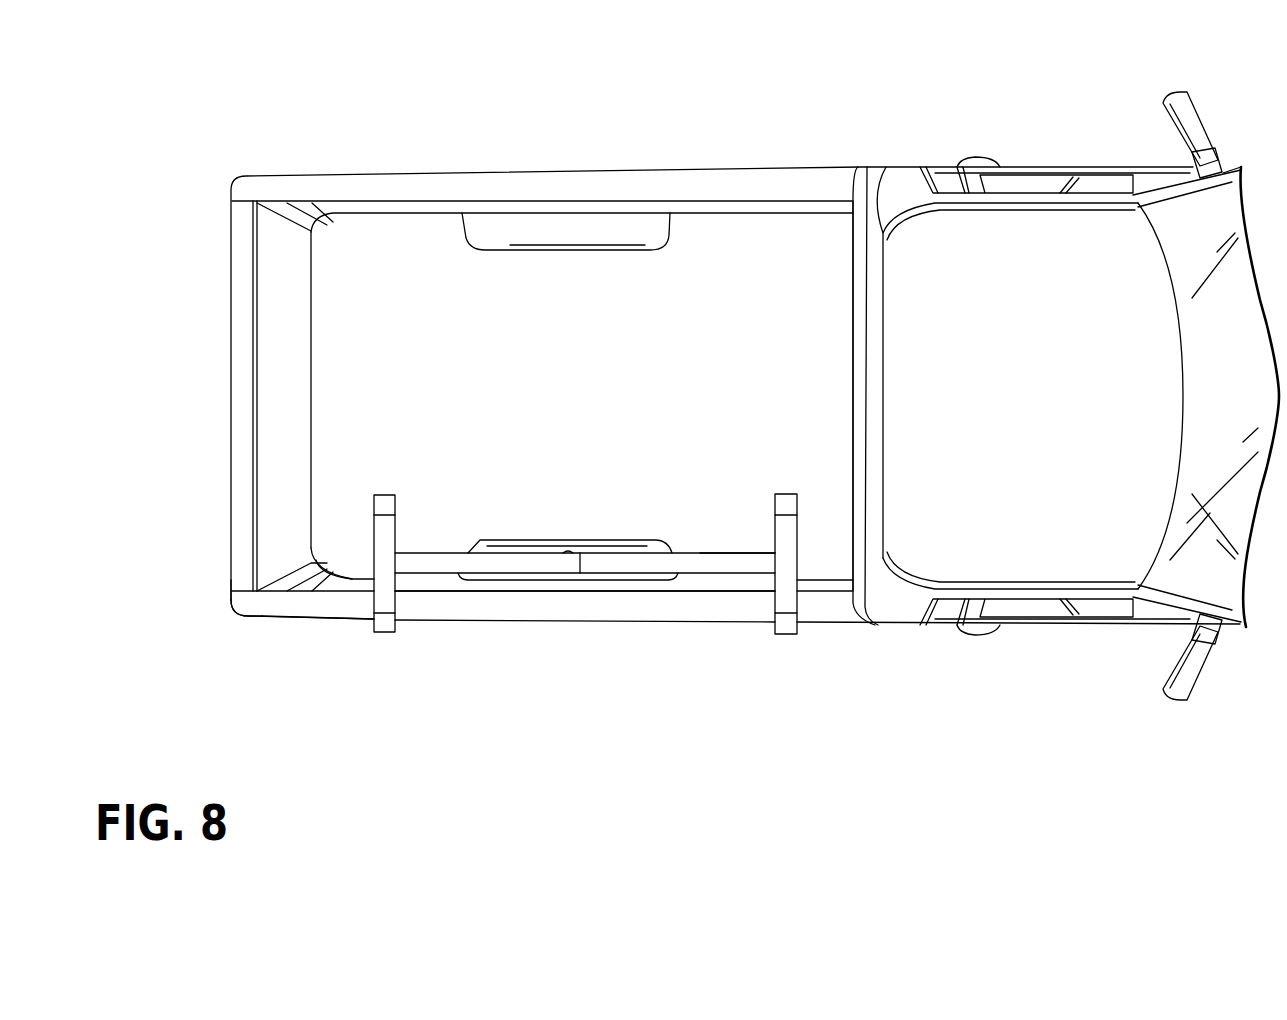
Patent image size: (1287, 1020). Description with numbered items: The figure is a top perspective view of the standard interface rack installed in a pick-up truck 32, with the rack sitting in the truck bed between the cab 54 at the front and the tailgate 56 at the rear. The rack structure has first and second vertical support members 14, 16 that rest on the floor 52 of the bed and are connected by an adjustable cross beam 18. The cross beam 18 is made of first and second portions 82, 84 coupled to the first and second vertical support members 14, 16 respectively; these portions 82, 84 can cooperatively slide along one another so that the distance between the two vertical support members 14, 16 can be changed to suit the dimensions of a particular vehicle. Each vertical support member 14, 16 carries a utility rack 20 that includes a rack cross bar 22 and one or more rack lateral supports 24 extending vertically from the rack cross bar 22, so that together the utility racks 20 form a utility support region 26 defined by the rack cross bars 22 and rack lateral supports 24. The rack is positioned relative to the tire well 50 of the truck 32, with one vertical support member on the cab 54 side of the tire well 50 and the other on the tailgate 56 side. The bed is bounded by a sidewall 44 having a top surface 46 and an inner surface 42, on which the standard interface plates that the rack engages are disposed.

The pick-up truck 32 is at (912, 155).
The cab 54 is at (852, 265).
The floor 52 is at (527, 351).
The tailgate 56 is at (243, 446).
The inner surface 42 is at (352, 587).
The sidewall 44 is at (252, 618).
The top surface 46 is at (325, 600).
The rack lateral support 24 is at (374, 505).
The rack cross bar 22 is at (386, 530).
The first vertical support member 14 is at (396, 628).
The utility support region 26 is at (523, 519).
The tire well 50 is at (624, 540).
The adjustable cross beam 18 is at (687, 550).
The second portion 84 is at (738, 560).
The first portion 82 is at (518, 582).
The utility rack 20 is at (746, 601).
The second vertical support member 16 is at (800, 610).